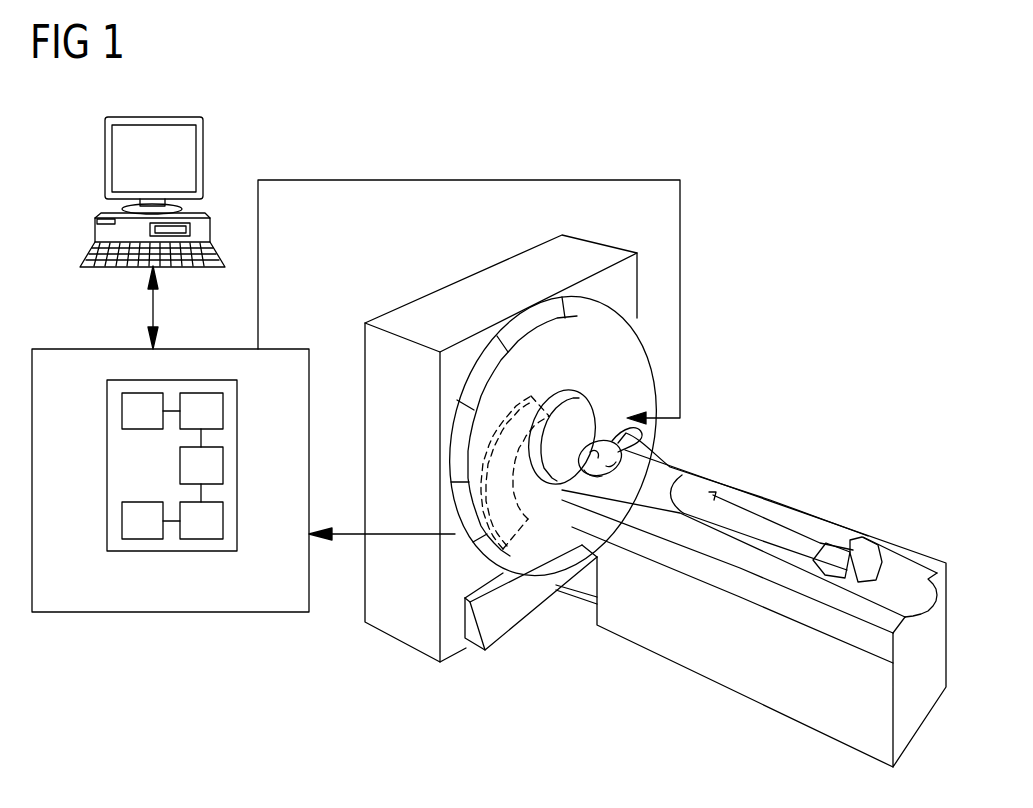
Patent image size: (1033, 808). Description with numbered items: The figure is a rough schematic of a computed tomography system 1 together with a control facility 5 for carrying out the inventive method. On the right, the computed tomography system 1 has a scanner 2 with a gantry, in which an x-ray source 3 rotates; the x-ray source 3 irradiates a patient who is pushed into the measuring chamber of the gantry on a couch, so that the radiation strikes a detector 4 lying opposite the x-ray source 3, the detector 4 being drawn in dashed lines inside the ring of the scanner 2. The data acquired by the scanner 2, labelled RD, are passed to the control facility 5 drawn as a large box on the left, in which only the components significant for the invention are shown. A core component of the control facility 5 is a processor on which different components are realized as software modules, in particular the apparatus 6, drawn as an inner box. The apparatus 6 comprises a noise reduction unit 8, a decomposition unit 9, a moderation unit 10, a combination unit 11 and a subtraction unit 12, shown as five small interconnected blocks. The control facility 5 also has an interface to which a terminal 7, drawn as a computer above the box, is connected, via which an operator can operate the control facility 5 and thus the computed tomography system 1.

The computed tomography system 1 is at (803, 302).
The scanner 2 is at (430, 303).
The x-ray source 3 is at (610, 417).
The detector 4 is at (513, 537).
The control facility 5 is at (274, 347).
The apparatus 6 is at (193, 380).
The terminal 7 is at (104, 152).
The noise reduction unit 8 is at (122, 410).
The decomposition unit 9 is at (223, 411).
The moderation unit 10 is at (223, 465).
The combination unit 11 is at (223, 521).
The subtraction unit 12 is at (122, 521).
The raw data RD is at (348, 531).